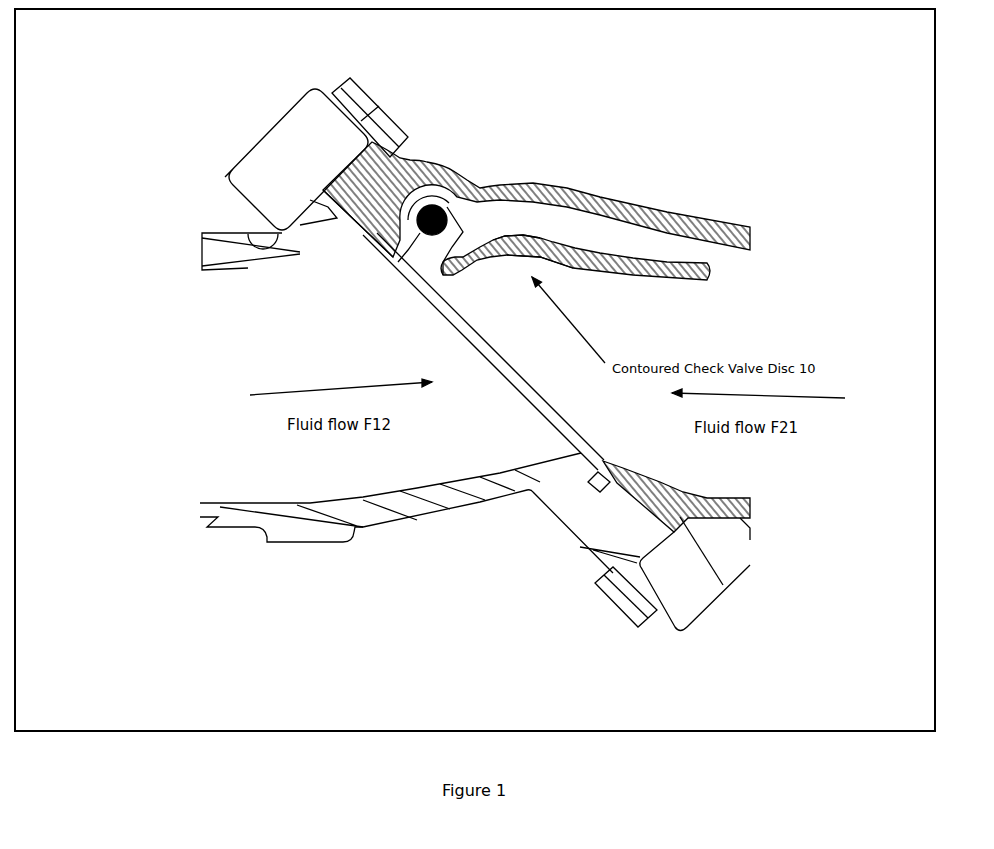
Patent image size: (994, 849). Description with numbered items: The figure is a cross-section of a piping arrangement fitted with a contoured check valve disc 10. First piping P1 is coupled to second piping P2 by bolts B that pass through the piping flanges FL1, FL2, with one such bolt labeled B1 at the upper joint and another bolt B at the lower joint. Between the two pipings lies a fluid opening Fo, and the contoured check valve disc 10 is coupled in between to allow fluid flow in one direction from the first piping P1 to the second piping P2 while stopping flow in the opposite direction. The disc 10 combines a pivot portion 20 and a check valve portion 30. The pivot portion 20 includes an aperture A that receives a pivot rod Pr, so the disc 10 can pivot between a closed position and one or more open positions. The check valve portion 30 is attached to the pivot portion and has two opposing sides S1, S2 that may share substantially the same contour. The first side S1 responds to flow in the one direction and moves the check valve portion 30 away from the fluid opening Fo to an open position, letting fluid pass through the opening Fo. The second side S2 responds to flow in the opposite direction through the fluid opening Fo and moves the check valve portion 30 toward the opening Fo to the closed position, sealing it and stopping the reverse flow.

The bolt B1 is at (363, 117).
The piping flange FL2 is at (317, 142).
The second piping P2 is at (368, 180).
The pivot rod Pr is at (418, 220).
The aperture A is at (427, 229).
The first piping P1 is at (218, 248).
The pivot portion 20 is at (433, 242).
The check valve portion 30 is at (447, 268).
The fluid opening Fo is at (460, 343).
The second side S2 is at (528, 233).
The contoured check valve disc 10 is at (567, 218).
The first side S1 is at (545, 263).
The piping flange FL1 is at (665, 570).
The bolts B is at (615, 592).